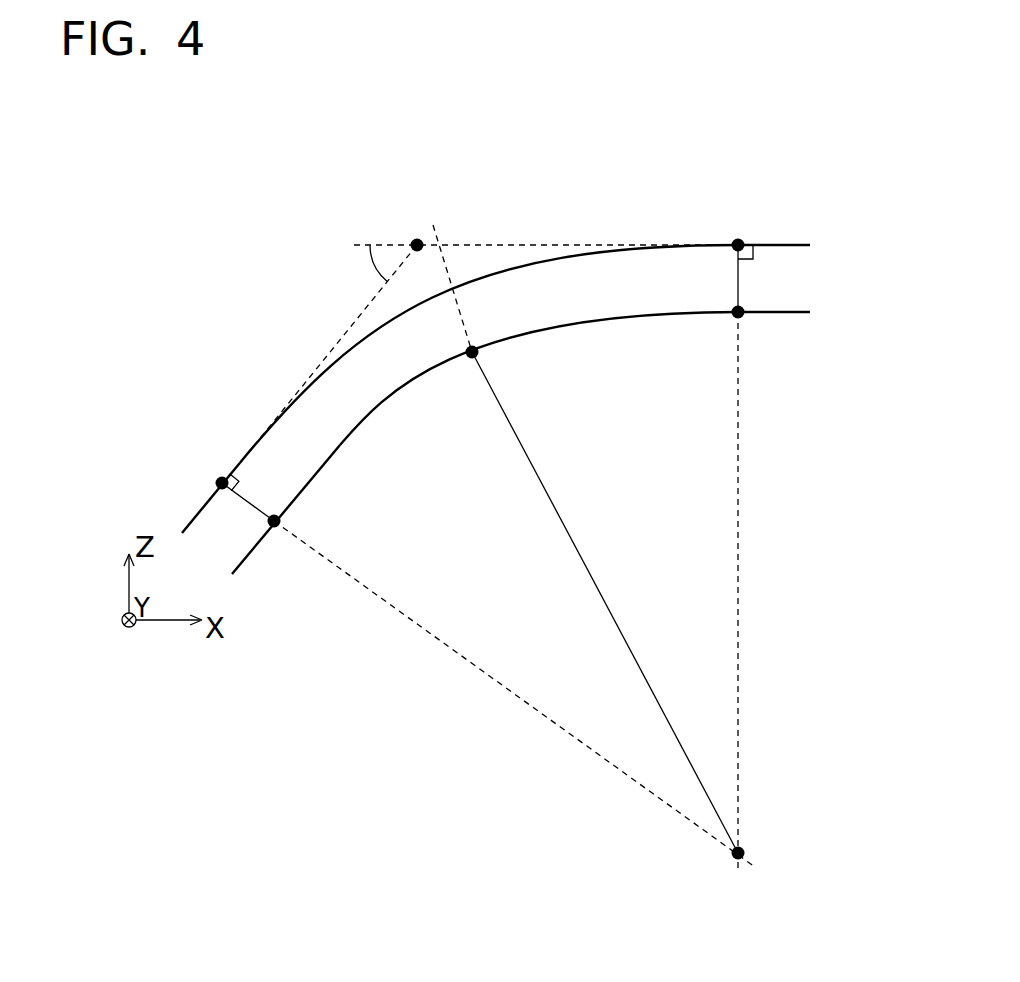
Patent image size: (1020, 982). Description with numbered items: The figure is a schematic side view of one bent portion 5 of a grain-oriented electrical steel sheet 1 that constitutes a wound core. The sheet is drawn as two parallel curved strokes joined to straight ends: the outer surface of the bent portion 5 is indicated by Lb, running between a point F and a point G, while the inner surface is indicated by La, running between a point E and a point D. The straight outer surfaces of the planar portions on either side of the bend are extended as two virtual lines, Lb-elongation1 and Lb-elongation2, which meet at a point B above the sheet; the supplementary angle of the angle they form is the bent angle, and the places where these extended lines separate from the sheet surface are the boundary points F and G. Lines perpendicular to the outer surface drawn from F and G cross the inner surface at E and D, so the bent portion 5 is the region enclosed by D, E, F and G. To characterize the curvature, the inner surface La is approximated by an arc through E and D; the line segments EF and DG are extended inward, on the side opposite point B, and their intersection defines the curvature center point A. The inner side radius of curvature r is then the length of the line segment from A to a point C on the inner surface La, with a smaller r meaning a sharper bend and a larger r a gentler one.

The grain-oriented electrical steel sheet 1 is at (381, 167).
The bent portion 5 is at (440, 313).
The inner surface of the bent portion La is at (634, 318).
The outer surface of the bent portion Lb is at (333, 362).
The virtual line Lb-elongation1 is at (585, 213).
The virtual line Lb-elongation2 is at (375, 298).
The inner side radius of curvature r is at (605, 602).
The curvature center point A is at (752, 852).
The intersection point of the virtual lines B is at (413, 232).
The point on the inner surface C is at (490, 363).
The boundary point on the inner surface D is at (751, 328).
The boundary point on the inner surface E is at (291, 523).
The boundary point on the outer surface F is at (221, 468).
The boundary point on the outer surface G is at (744, 231).